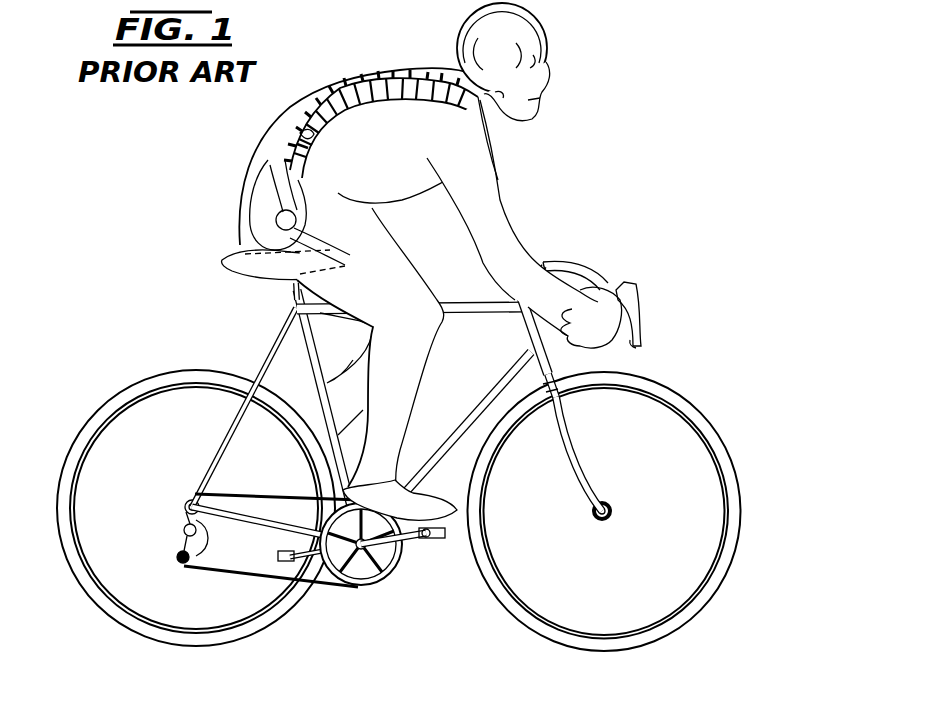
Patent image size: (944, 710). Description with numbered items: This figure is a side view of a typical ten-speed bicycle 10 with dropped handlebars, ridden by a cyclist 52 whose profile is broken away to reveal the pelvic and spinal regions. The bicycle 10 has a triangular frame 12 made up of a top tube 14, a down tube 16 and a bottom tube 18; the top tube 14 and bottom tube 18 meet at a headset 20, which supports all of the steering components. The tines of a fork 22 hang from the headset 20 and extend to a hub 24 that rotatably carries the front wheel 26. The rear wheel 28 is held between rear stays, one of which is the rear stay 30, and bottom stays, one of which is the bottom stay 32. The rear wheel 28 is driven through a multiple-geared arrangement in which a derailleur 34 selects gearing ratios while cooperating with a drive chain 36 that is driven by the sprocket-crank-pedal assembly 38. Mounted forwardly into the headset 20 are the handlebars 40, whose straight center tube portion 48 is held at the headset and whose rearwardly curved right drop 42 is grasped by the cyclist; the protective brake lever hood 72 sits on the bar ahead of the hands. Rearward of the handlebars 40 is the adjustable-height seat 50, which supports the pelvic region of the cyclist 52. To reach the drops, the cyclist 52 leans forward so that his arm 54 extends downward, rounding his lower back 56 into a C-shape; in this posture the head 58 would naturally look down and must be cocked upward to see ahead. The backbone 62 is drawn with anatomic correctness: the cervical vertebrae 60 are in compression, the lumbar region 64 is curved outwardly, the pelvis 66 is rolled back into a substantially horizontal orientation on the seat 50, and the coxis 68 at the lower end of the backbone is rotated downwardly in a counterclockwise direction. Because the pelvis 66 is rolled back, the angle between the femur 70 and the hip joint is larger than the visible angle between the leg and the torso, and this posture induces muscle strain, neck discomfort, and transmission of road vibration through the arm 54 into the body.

The bicycle 10 is at (693, 270).
The frame 12 is at (468, 373).
The top tube 14 is at (476, 304).
The down tube 16 is at (312, 376).
The bottom tube 18 is at (465, 420).
The headset 20 is at (528, 327).
The fork 22 is at (566, 441).
The hub 24 is at (618, 511).
The front wheel 26 is at (727, 452).
The rear wheel 28 is at (93, 426).
The rear stay 30 is at (270, 342).
The bottom stay 32 is at (256, 525).
The derailleur 34 is at (177, 556).
The drive chain 36 is at (320, 590).
The sprocket-crank-pedal assembly 38 is at (392, 575).
The handlebars 40 is at (603, 258).
The right drop 42 is at (626, 346).
The center tube portion 48 is at (548, 262).
The seat 50 is at (240, 283).
The cyclist 52 is at (382, 58).
The arm 54 is at (518, 218).
The lower back 56 is at (291, 118).
The head 58 is at (538, 32).
The cervical vertebrae 60 is at (467, 70).
The backbone 62 is at (290, 125).
The lumbar region 64 is at (292, 145).
The pelvis 66 is at (265, 241).
The coxis 68 is at (255, 222).
The femur 70 is at (350, 260).
The brake lever hood 72 is at (632, 283).